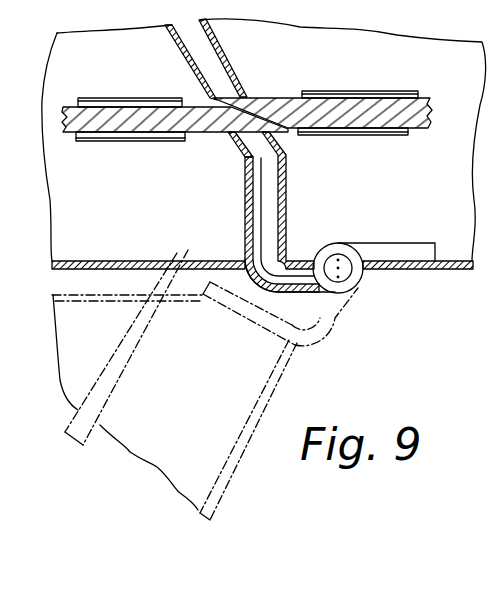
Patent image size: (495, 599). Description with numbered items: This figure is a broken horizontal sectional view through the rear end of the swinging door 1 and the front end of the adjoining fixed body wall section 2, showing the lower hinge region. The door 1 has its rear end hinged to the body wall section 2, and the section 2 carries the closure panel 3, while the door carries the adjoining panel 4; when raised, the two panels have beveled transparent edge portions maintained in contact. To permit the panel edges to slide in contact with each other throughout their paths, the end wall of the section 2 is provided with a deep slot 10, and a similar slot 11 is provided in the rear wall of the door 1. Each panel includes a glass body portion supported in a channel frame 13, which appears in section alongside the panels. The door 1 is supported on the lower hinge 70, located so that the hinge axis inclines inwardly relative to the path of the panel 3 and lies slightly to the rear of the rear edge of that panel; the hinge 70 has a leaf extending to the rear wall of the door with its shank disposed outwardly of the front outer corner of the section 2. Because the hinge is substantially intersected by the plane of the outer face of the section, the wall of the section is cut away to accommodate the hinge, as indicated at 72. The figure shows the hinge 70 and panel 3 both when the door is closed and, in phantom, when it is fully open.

The swinging door 1 is at (58, 269).
The fixed body wall section 2 is at (445, 270).
The closure panel 3 is at (158, 124).
The panel 4 is at (357, 108).
The slot 10 is at (279, 151).
The slot 11 is at (243, 158).
The channel frame 13 is at (378, 135).
The lower hinge 70 is at (289, 292).
The cut-away portion 72 is at (316, 254).